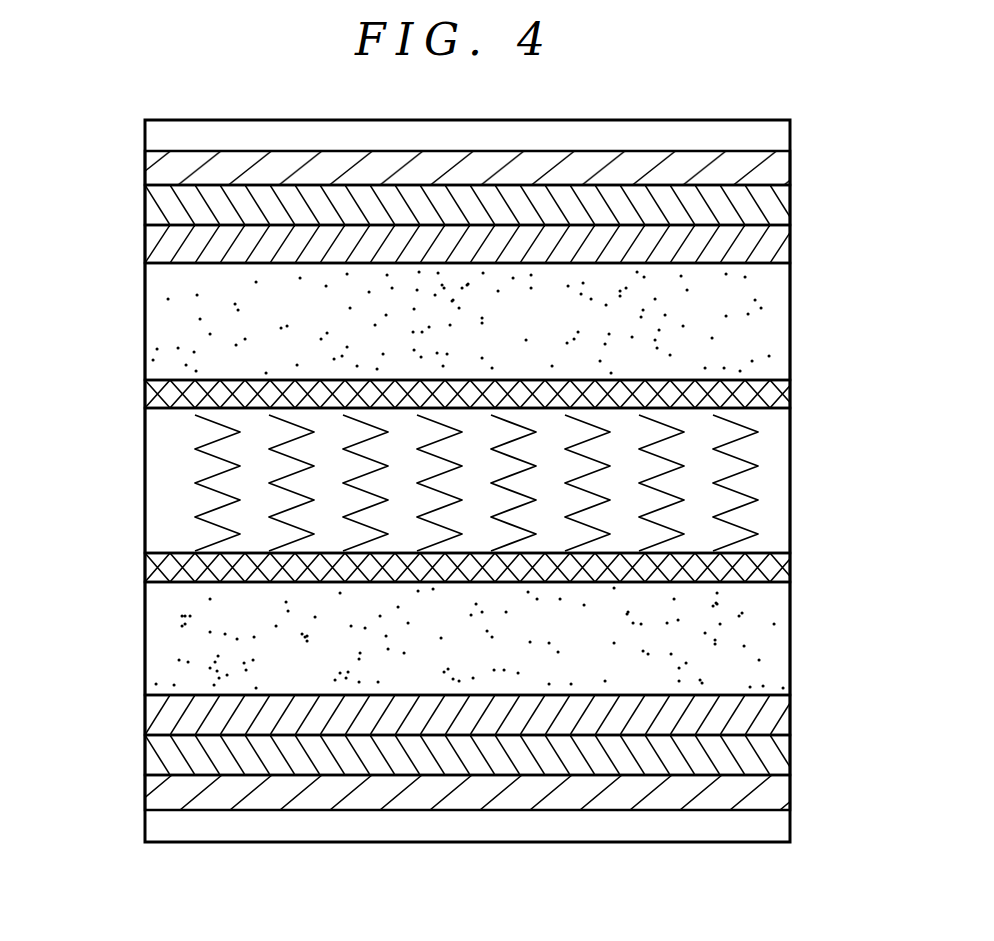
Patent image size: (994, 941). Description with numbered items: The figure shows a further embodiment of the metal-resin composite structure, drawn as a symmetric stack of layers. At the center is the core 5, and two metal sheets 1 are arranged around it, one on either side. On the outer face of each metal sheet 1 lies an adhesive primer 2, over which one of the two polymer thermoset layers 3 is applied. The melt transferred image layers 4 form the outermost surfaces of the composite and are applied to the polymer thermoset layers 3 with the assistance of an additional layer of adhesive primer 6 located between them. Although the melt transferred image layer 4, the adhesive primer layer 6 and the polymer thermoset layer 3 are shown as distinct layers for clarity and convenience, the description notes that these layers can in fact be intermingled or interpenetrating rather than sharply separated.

The metal sheet 1 is at (762, 322).
The adhesive primer 2 is at (163, 249).
The polymer thermoset layer 3 is at (763, 208).
The melt transferred image layer 4 is at (763, 135).
The core 5 is at (763, 480).
The adhesive primer layer 6 is at (163, 165).